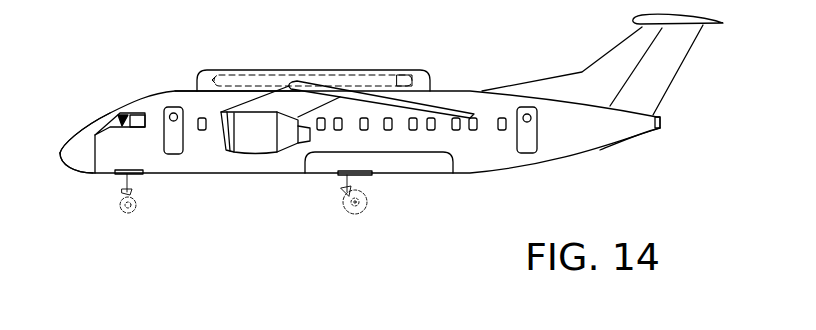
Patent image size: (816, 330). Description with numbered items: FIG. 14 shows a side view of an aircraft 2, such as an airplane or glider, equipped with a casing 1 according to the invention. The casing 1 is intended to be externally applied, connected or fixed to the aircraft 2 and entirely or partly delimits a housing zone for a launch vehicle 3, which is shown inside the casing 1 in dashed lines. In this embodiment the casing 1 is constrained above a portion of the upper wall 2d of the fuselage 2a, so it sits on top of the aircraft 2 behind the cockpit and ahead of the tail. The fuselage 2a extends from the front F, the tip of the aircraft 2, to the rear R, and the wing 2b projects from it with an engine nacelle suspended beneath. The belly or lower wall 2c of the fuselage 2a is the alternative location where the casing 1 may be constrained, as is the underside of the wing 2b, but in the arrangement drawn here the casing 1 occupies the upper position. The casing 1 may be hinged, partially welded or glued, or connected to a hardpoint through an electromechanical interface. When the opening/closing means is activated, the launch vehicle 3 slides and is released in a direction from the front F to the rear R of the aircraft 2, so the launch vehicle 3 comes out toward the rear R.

The casing 1 is at (391, 130).
The aircraft 2 is at (360, 135).
The fuselage 2a is at (157, 93).
The wing 2b is at (430, 100).
The lower wall of the fuselage 2c is at (467, 177).
The upper wall of the fuselage 2d is at (185, 90).
The launch vehicle 3 is at (333, 68).
The front of the aircraft F is at (62, 165).
The rear of the aircraft R is at (657, 133).